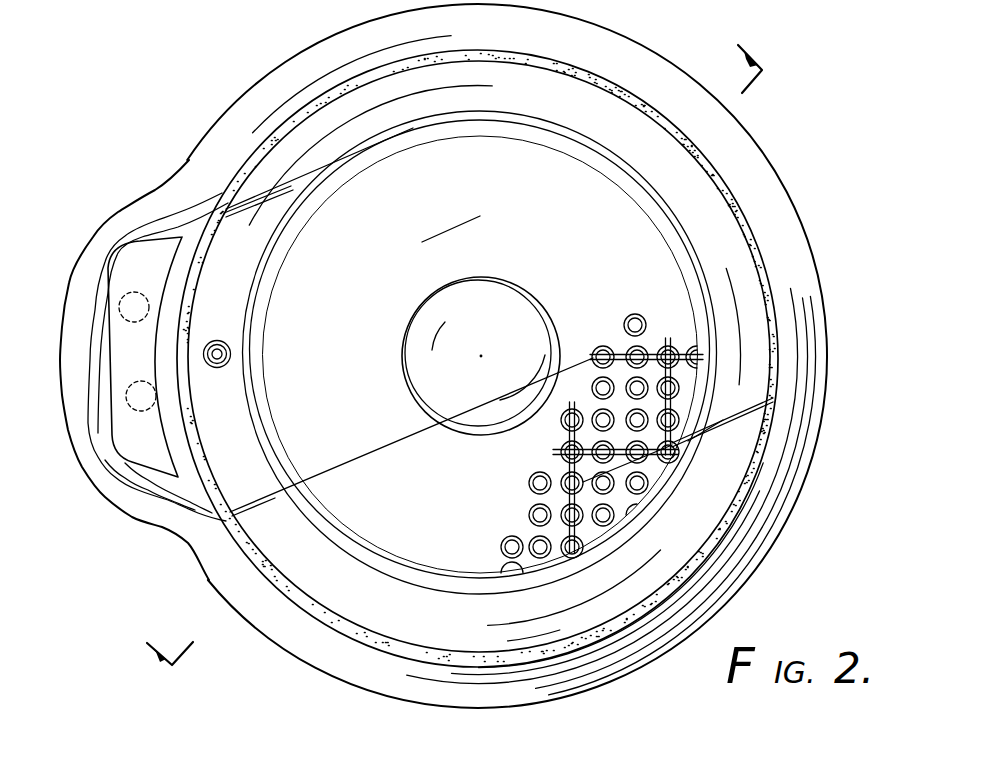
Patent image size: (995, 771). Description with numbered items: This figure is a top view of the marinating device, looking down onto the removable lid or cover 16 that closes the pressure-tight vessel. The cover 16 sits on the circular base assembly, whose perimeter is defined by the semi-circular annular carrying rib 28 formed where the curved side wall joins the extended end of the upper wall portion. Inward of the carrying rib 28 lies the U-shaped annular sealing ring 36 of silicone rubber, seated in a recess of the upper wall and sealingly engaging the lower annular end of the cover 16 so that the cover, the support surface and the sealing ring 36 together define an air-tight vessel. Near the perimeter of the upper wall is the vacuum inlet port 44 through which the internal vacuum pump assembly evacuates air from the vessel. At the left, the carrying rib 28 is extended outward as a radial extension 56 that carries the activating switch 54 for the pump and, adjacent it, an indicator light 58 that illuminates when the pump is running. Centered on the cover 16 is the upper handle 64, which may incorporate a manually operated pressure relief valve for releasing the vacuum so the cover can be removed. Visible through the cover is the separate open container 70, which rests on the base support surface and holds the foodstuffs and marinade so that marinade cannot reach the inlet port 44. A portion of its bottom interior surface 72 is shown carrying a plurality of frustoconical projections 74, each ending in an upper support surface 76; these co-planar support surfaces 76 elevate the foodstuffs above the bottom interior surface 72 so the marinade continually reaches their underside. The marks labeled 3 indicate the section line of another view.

The section line 3- 3 is at (448, 357).
The removable lid or cover 16 is at (764, 277).
The semi-circular annular carrying rib 28 is at (763, 152).
The annular sealing ring 36 is at (747, 218).
The vacuum inlet port 44 is at (218, 341).
The activating switch 54 is at (126, 389).
The radial extension 56 is at (105, 497).
The indicator light 58 is at (130, 307).
The upper handle 64 is at (541, 303).
The open container 70 is at (563, 128).
The bottom interior surface 72 is at (617, 371).
The frustoconical projections 74 is at (648, 323).
The support surface 76 is at (634, 314).